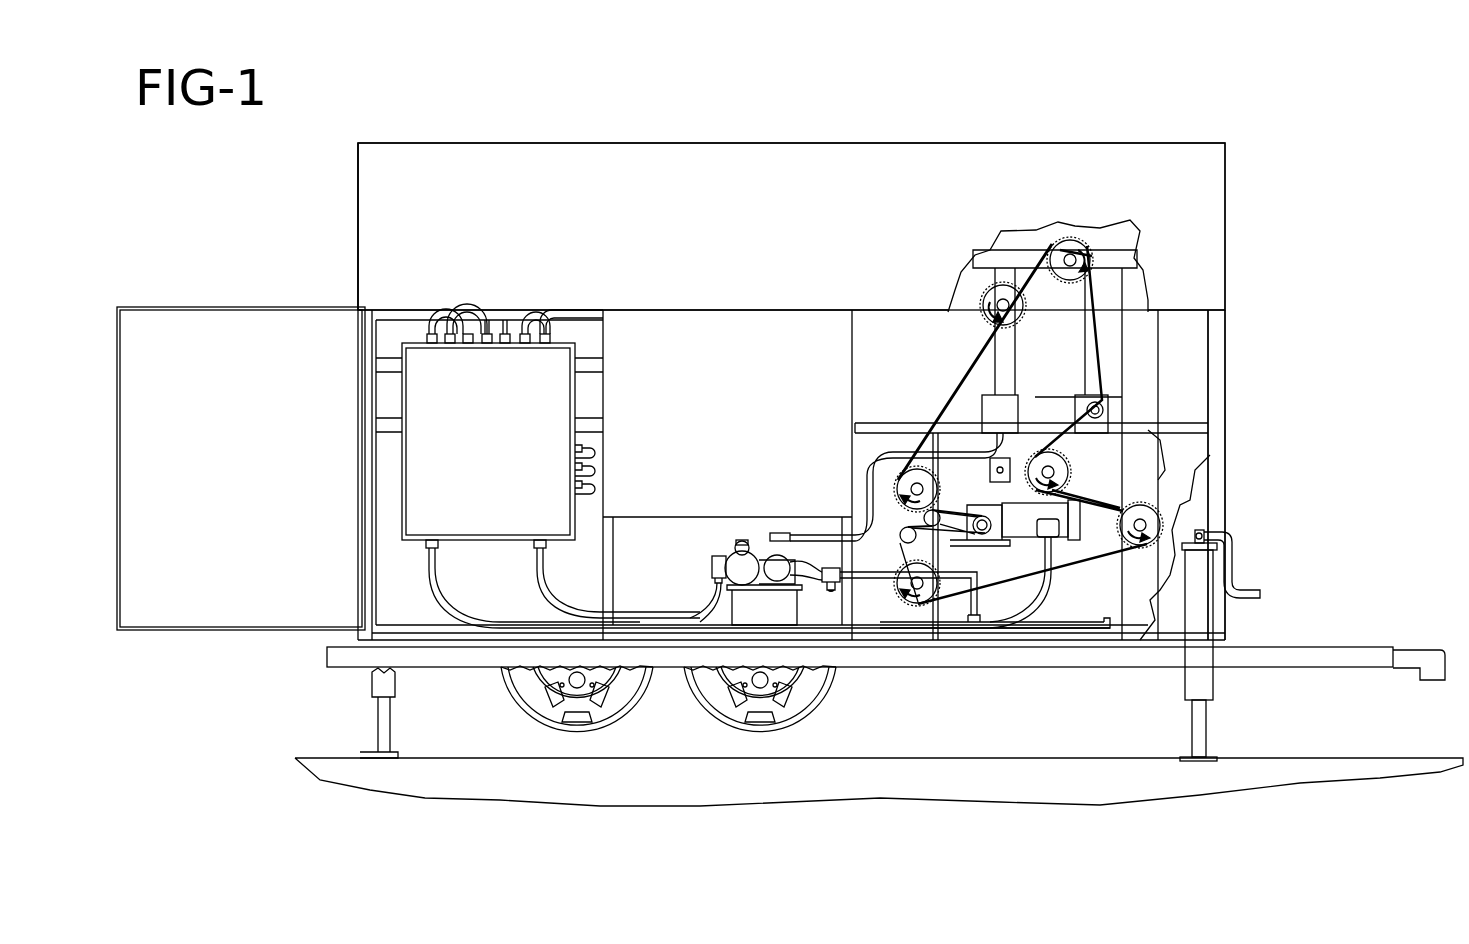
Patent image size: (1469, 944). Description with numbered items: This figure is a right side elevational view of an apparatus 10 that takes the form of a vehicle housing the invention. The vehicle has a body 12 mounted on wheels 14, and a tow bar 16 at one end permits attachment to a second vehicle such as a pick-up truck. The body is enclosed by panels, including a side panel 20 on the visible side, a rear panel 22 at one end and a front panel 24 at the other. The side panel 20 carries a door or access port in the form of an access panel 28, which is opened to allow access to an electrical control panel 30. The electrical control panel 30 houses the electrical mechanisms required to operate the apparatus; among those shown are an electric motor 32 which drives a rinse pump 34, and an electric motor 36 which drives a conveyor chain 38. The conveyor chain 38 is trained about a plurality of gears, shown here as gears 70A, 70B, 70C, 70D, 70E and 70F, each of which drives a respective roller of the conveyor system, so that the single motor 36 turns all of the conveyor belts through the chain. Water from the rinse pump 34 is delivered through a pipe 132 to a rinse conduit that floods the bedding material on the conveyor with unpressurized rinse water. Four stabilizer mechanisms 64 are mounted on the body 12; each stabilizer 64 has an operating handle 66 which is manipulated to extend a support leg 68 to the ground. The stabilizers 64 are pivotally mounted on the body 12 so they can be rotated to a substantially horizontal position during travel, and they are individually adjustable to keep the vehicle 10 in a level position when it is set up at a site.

The apparatus 10 is at (682, 124).
The body 12 is at (1226, 272).
The wheels 14 is at (531, 712).
The tow bar 16 is at (1392, 655).
The side panel 20 is at (752, 243).
The rear panel 22 is at (358, 243).
The front panel 24 is at (1213, 388).
The access panel 28 is at (252, 533).
The electrical control panel 30 is at (500, 481).
The electric motor 32 is at (740, 565).
The rinse pump 34 is at (773, 558).
The electric motor 36 is at (1063, 537).
The conveyor chain 38 is at (1012, 588).
The stabilizer mechanism 64 is at (1206, 634).
The operating handle 66 is at (1245, 580).
The support leg 68 is at (1193, 727).
The gear 70A is at (914, 472).
The gear 70B is at (1000, 293).
The gear 70C is at (1062, 466).
The gear 70D is at (893, 595).
The gear 70E is at (1150, 514).
The gear 70F is at (1068, 250).
The pipe 132 is at (876, 488).